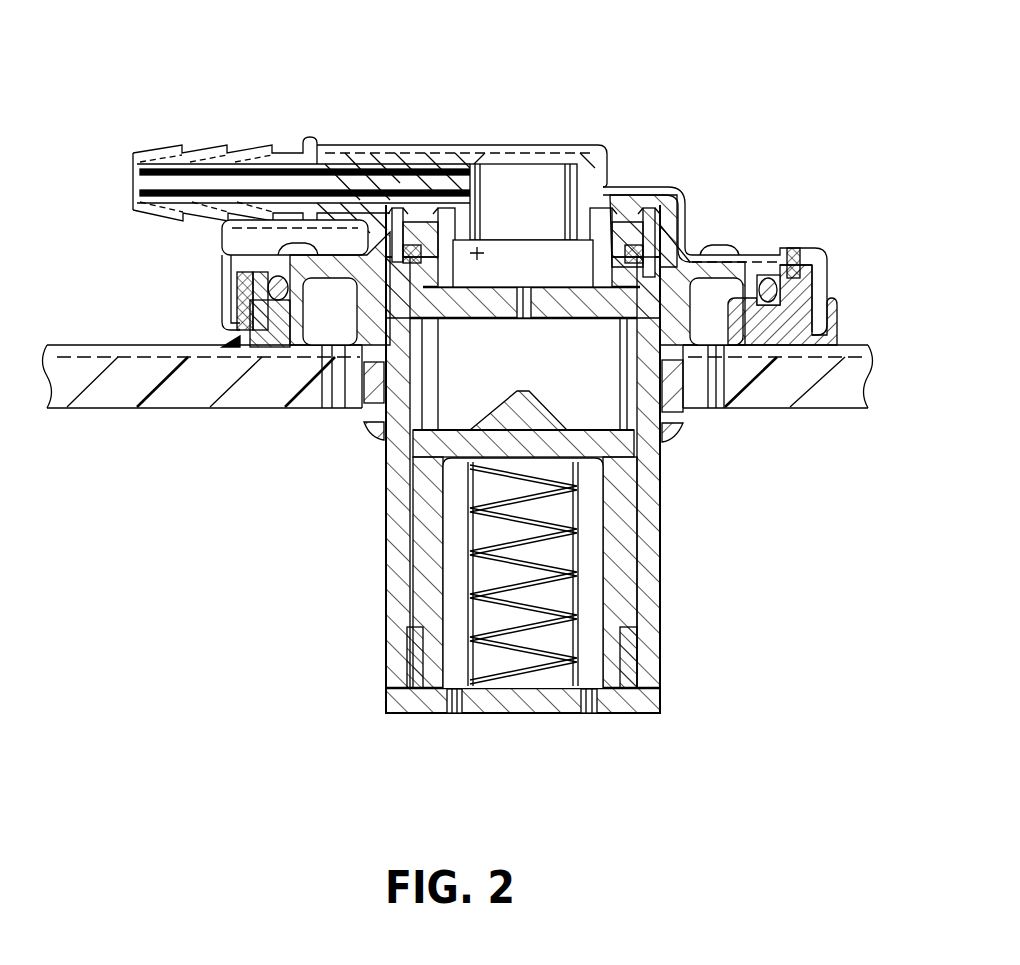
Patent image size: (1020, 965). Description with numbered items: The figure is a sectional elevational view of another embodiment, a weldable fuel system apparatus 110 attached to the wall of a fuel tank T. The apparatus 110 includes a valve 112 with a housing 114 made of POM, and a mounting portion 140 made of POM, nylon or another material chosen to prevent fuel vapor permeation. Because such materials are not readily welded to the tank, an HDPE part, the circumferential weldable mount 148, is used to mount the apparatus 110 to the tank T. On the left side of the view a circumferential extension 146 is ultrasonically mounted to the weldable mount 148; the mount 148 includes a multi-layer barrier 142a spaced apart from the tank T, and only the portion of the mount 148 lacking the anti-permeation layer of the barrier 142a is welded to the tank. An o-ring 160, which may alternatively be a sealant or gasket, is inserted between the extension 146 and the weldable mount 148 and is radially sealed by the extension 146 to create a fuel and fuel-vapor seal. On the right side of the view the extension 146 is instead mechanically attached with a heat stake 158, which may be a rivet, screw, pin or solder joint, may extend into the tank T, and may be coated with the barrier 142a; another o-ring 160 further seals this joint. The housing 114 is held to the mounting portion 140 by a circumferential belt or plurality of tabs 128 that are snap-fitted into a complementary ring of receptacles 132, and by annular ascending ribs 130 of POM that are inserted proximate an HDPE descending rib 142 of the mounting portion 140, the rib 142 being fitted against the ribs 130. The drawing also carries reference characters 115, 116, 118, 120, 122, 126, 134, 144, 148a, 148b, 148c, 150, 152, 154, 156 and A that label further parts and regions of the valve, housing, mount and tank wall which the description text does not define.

The weldable fuel system apparatus 110 is at (518, 96).
The valve 112 is at (676, 524).
The housing 114 is at (653, 660).
The valve chamber 115 is at (502, 389).
The valve member / piston 116 is at (593, 440).
The valve head 118 is at (521, 392).
The spring 120 is at (577, 566).
The bottom retaining plate 122 is at (660, 700).
The vent passage 126 is at (531, 300).
The tabs 128 is at (362, 413).
The ascending ribs 130 is at (442, 216).
The receptacles 132 is at (372, 440).
The seal ring 134 is at (690, 203).
The mounting portion 140 is at (703, 145).
The descending rib 142 is at (582, 262).
The multi-layer barrier 142a is at (686, 197).
The housing flange 144 is at (250, 275).
The circumferential extension 146 is at (196, 263).
The circumferential weldable mount 148 is at (225, 340).
The seal outer layer 148a is at (237, 290).
The seal inner layer 148b is at (236, 303).
The seal lip 148c is at (228, 347).
The outlet post 150 is at (545, 209).
The hose barb / cover 152 is at (168, 143).
The upper flow channel 154 is at (138, 170).
The lower flow channel 156 is at (138, 194).
The heat stake 158 is at (783, 247).
The o-ring 160 is at (284, 300).
The tank wall region A is at (696, 388).
The tank T is at (792, 399).